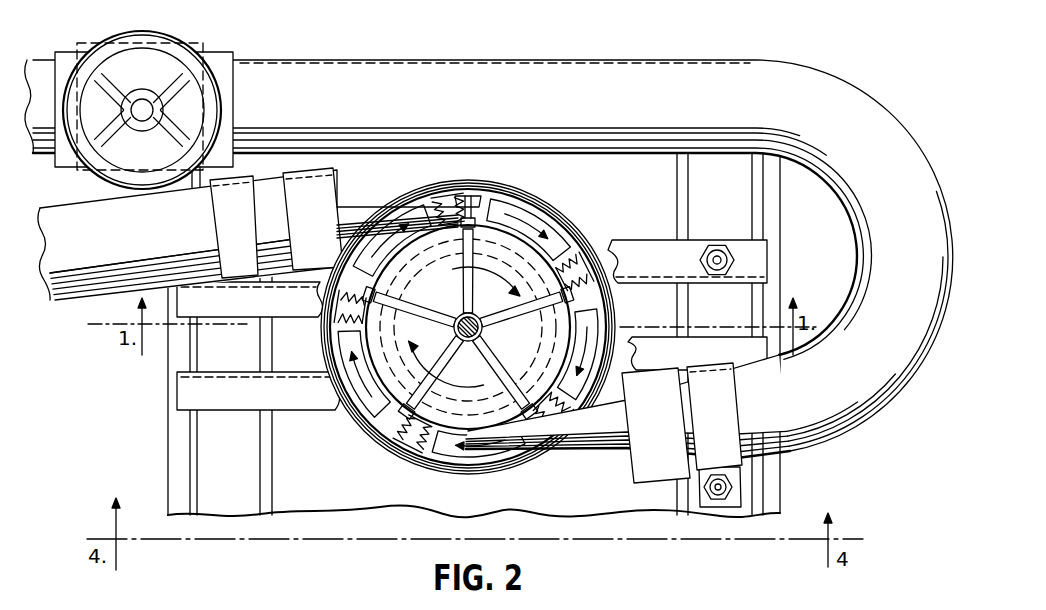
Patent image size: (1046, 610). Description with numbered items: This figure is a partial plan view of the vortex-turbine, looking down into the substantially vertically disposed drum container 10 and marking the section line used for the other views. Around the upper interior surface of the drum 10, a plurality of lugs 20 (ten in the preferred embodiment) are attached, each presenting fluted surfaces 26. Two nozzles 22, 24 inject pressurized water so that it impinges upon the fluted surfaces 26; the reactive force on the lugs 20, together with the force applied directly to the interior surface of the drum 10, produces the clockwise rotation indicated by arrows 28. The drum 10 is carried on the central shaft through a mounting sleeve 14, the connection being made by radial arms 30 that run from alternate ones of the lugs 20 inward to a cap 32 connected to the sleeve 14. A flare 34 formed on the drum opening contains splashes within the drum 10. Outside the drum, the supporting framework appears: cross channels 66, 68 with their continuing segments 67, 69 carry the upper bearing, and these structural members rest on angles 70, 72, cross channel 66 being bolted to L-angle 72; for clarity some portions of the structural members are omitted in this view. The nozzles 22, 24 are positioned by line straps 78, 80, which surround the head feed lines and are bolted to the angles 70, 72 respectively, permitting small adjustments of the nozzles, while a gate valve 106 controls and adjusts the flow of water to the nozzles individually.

The drum container 10 is at (353, 424).
The mounting sleeve 14 is at (462, 315).
The lugs 20 is at (397, 363).
The nozzle 22 is at (356, 226).
The nozzle 24 is at (598, 428).
The fluted surfaces 26 is at (540, 210).
The arrows 28 is at (408, 357).
The radial arms 30 is at (409, 300).
The cap 32 is at (466, 348).
The flare 34 is at (530, 194).
The cross channel 66 is at (640, 253).
The continuing segment 67 is at (227, 308).
The cross channel 68 is at (297, 385).
The continuing segment 69 is at (655, 343).
The angle 70 is at (203, 467).
The angle 72 is at (733, 220).
The line strap 78 is at (230, 225).
The line strap 80 is at (722, 420).
The gate valve 106 is at (185, 62).